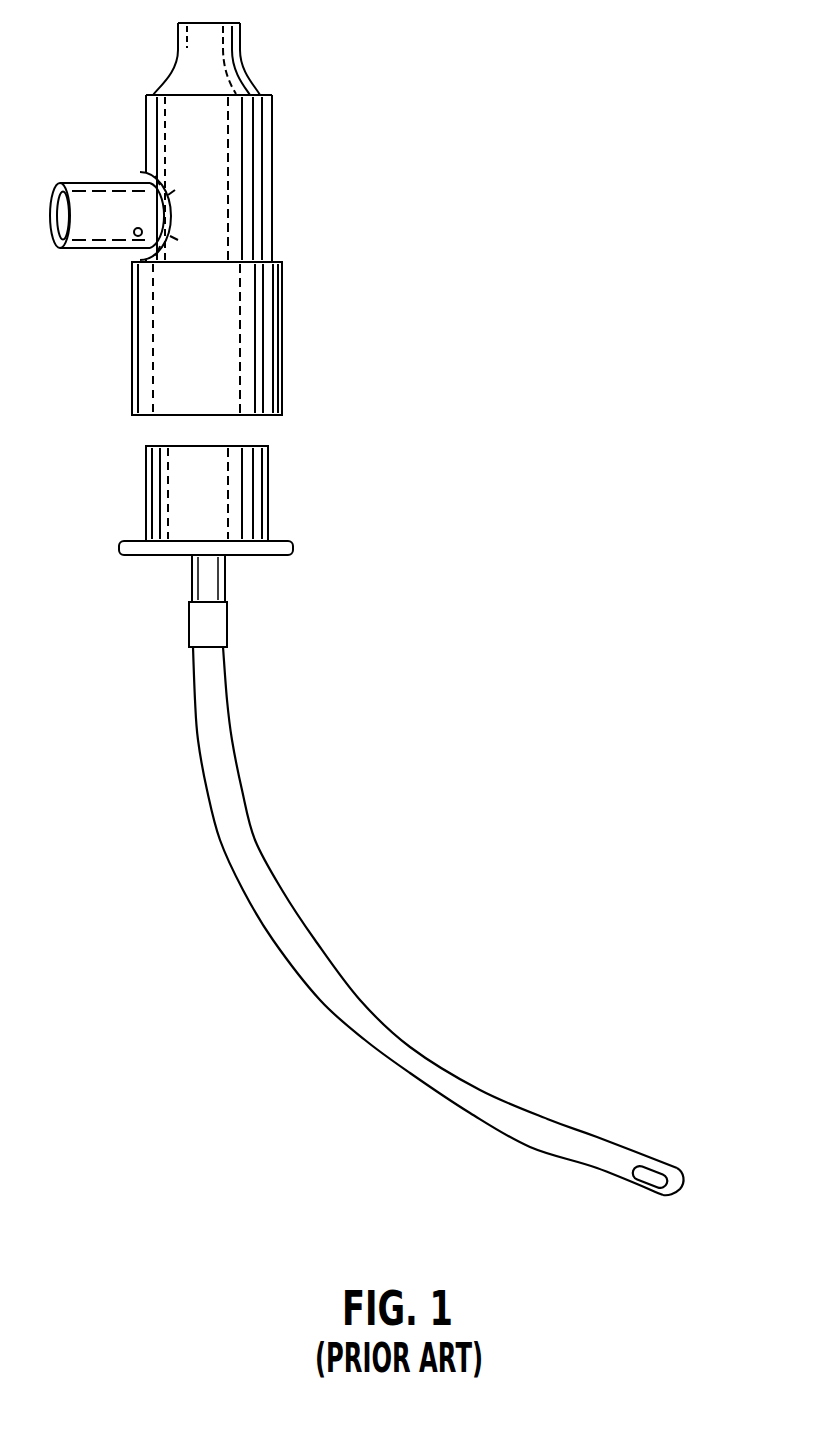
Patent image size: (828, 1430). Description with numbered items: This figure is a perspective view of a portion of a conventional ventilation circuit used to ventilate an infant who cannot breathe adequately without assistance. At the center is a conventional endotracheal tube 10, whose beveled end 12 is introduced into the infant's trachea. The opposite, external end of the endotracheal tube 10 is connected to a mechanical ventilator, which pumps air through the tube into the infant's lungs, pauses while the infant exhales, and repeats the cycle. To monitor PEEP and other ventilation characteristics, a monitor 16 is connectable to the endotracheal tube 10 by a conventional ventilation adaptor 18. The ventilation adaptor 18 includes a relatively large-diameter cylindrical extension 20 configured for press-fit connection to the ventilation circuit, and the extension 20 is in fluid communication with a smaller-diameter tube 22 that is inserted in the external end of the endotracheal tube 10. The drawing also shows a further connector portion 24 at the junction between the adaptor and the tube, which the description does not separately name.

The endotracheal tube 10 is at (402, 1058).
The beveled end 12 is at (678, 1170).
The monitor 16 is at (227, 161).
The ventilation adaptor 18 is at (248, 495).
The cylindrical extension 20 is at (177, 500).
The smaller-diameter tube 22 is at (207, 577).
The tube connector 24 is at (227, 628).